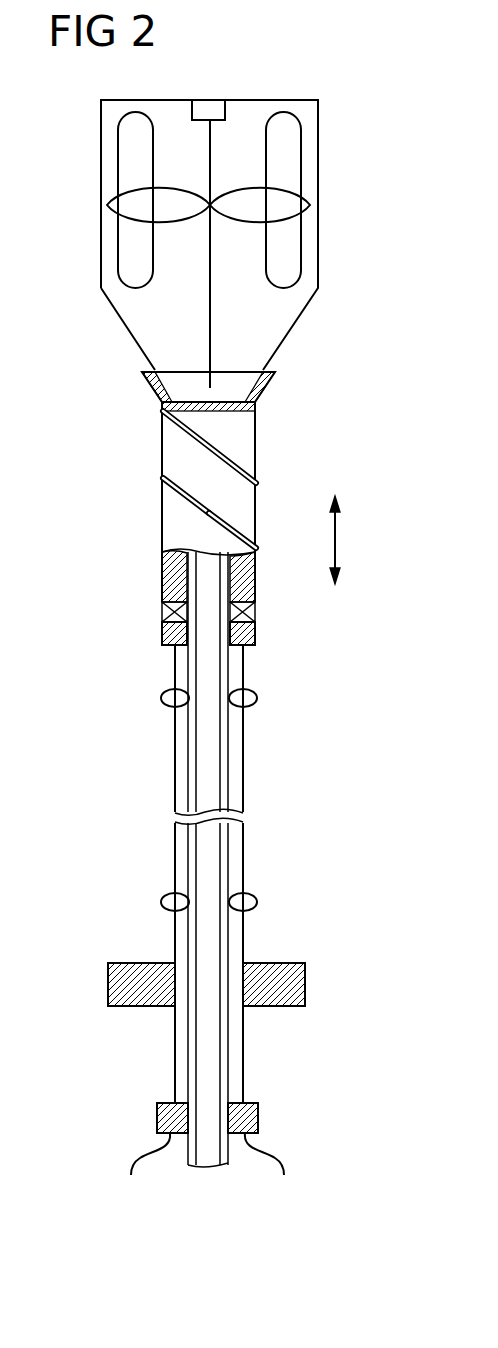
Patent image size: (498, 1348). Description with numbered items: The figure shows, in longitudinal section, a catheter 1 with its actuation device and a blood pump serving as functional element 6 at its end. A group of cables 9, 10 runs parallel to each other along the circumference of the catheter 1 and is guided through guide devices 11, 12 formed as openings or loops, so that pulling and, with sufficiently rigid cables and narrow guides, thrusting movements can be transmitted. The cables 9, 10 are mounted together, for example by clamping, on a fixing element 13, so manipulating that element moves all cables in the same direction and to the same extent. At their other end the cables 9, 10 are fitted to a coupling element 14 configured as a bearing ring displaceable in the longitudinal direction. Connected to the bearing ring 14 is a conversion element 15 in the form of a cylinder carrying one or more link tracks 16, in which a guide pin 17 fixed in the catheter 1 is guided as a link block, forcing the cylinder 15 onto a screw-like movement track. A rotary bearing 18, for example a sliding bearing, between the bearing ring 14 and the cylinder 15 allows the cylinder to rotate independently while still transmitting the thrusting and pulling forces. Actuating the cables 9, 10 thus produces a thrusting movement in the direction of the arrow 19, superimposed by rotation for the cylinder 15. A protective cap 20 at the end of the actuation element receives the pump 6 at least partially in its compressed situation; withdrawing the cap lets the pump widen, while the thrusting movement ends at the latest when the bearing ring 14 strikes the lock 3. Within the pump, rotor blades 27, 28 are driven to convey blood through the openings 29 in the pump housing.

The catheter 1 is at (210, 768).
The lock 3 is at (305, 985).
The functional element 6 is at (300, 312).
The cable 9 is at (246, 840).
The cable 10 is at (173, 848).
The guide device 11 is at (258, 902).
The guide device 12 is at (160, 902).
The fixing element 13 is at (260, 1118).
The coupling element 14 is at (160, 628).
The conversion element 15 is at (257, 452).
The link track 16 is at (170, 497).
The guide pin 17 is at (212, 512).
The rotary bearing 18 is at (257, 610).
The arrow 19 is at (338, 545).
The protective cap 20 is at (263, 385).
The rotor blade 27 is at (107, 205).
The rotor blade 28 is at (310, 205).
The opening 29 is at (285, 122).